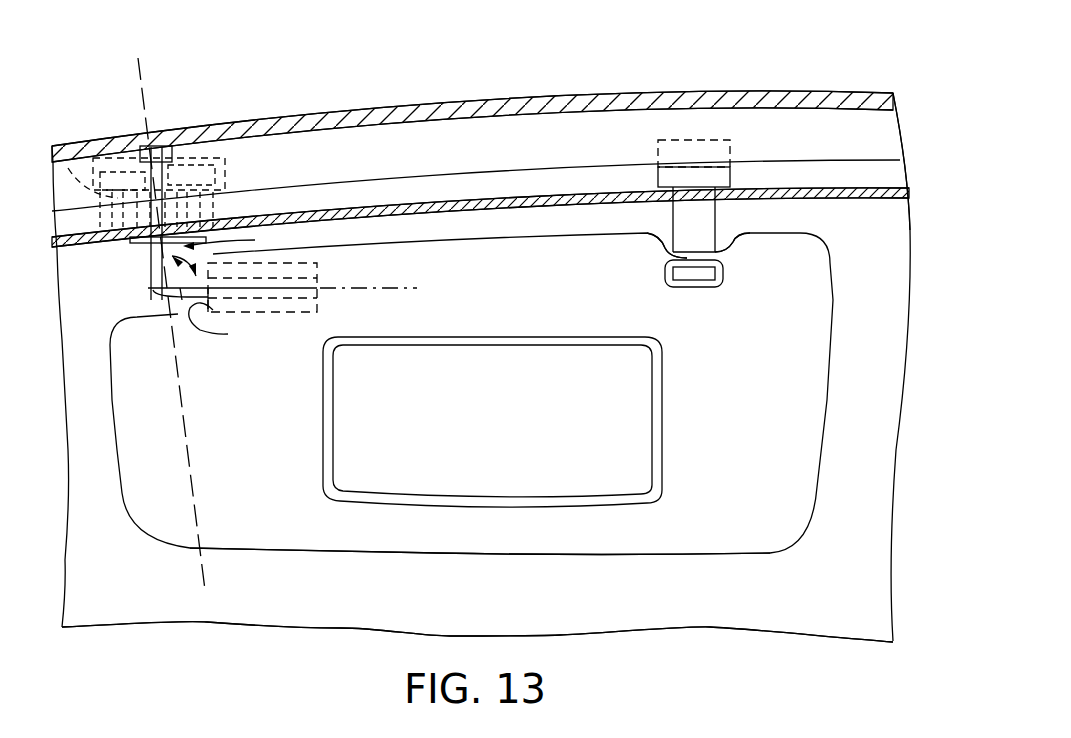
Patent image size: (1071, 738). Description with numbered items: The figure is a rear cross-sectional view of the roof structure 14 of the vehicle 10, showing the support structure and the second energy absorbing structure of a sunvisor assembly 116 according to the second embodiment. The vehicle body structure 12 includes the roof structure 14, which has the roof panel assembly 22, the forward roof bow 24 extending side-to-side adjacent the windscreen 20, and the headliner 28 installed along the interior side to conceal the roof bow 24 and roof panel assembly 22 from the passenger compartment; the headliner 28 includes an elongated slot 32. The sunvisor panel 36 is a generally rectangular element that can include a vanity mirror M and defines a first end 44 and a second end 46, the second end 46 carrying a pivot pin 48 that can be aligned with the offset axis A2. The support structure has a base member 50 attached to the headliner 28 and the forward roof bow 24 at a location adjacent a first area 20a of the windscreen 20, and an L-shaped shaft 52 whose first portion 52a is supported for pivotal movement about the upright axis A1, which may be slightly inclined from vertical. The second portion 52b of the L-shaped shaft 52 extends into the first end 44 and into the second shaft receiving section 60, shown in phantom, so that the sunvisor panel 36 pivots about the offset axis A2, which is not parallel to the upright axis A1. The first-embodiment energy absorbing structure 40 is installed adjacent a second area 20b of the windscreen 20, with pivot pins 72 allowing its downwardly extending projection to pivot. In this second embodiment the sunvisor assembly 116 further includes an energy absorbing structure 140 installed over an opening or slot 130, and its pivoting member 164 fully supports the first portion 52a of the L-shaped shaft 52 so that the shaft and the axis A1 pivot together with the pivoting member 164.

The vehicle 10 is at (718, 48).
The vehicle body structure 12 is at (282, 110).
The roof structure 14 is at (352, 108).
The roof panel assembly 22 is at (435, 107).
The forward roof bow 24 is at (558, 145).
The windscreen 20 is at (738, 588).
The first area of the windscreen 20a is at (285, 237).
The second area of the windscreen 20b is at (658, 217).
The headliner 28 is at (865, 200).
The elongated slot 32 is at (742, 203).
The sunvisor panel 36 is at (758, 497).
The energy absorbing structure 40 is at (737, 142).
The first end of the sunvisor panel 44 is at (222, 325).
The second end of the sunvisor panel 46 is at (737, 247).
The pivot pin 48 is at (660, 243).
The base member 50 is at (140, 247).
The L-shaped shaft 52 is at (200, 254).
The first portion of the L-shaped shaft 52a is at (117, 133).
The second portion of the L-shaped shaft 52b is at (182, 300).
The second shaft receiving section 60 is at (277, 313).
The pivot pins 72 is at (712, 260).
The sunvisor assembly 116 is at (376, 560).
The opening or slot 130 is at (148, 288).
The energy absorbing structure 140 is at (195, 146).
The pivoting member 164 is at (65, 144).
The vanity mirror M is at (602, 393).
The upright axis A1 is at (140, 80).
The offset axis A2 is at (403, 288).